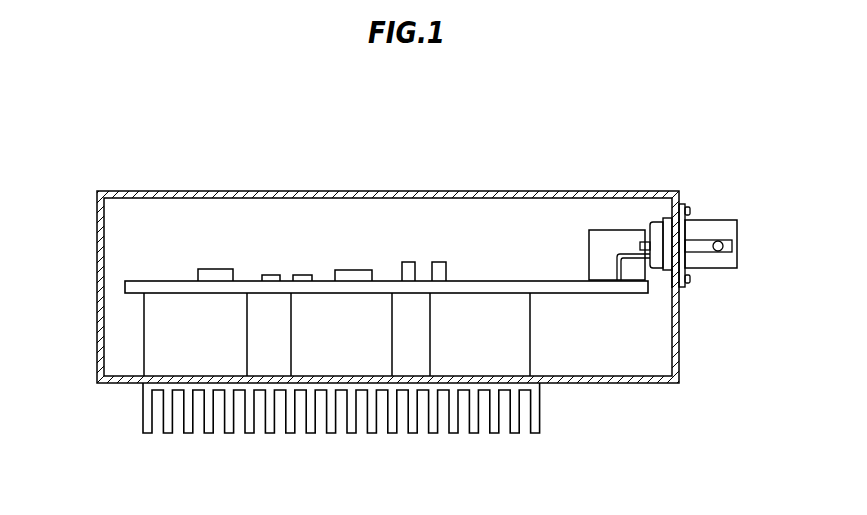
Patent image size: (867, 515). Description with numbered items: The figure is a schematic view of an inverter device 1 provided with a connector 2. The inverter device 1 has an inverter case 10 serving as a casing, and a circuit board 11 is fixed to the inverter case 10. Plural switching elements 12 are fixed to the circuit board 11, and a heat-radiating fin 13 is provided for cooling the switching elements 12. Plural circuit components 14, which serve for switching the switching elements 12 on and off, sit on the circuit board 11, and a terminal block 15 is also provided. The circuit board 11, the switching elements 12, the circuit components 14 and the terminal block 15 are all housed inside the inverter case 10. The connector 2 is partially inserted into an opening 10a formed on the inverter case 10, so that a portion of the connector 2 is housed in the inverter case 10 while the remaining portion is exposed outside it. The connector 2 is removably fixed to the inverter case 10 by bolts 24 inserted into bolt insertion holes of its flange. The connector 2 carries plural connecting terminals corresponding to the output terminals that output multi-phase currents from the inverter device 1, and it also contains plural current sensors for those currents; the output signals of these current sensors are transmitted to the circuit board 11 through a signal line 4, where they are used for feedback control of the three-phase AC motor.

The inverter device 1 is at (228, 138).
The connector 2 is at (698, 220).
The signal line 4 is at (627, 255).
The inverter case 10 is at (567, 383).
The opening 10a is at (667, 277).
The circuit board 11 is at (492, 280).
The switching elements 12 is at (462, 347).
The heat-radiating fin 13 is at (142, 407).
The circuit components 14 is at (408, 262).
The terminal block 15 is at (608, 230).
The bolts 24 is at (688, 208).